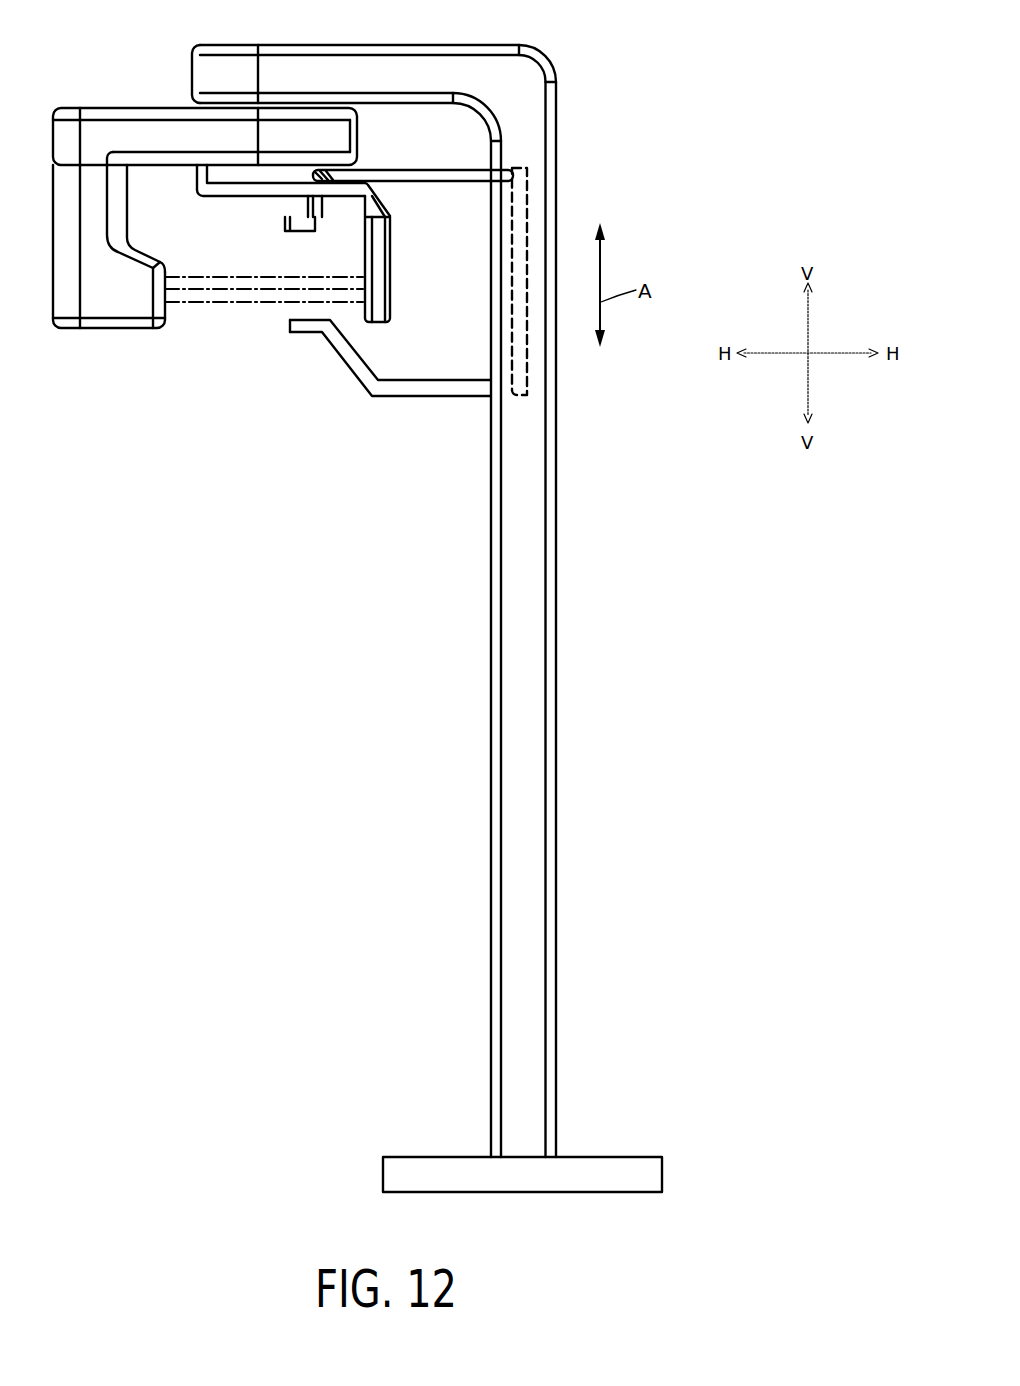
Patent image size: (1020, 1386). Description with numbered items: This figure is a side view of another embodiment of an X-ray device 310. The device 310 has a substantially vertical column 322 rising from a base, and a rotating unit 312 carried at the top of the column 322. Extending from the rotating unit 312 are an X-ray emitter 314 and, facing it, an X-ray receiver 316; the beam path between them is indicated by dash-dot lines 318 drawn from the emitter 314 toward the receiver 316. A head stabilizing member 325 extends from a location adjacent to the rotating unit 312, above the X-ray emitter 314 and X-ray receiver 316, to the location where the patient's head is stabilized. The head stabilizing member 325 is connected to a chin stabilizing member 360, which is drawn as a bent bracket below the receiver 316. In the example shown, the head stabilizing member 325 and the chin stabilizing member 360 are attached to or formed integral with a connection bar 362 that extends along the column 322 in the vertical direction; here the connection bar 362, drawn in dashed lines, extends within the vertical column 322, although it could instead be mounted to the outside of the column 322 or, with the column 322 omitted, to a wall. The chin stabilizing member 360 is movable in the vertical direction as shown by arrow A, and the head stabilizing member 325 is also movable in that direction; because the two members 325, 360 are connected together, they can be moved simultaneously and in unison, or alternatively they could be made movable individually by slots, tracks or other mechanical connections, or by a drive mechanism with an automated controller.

The device 310 is at (678, 99).
The rotating unit 312 is at (143, 130).
The X-ray emitter 314 is at (100, 302).
The X-ray receiver 316 is at (388, 300).
The x-ray beam 318 is at (228, 305).
The vertical column 322 is at (552, 442).
The head stabilizing member 325 is at (388, 172).
The chin stabilizing member 360 is at (385, 390).
The connection bar 362 is at (515, 230).